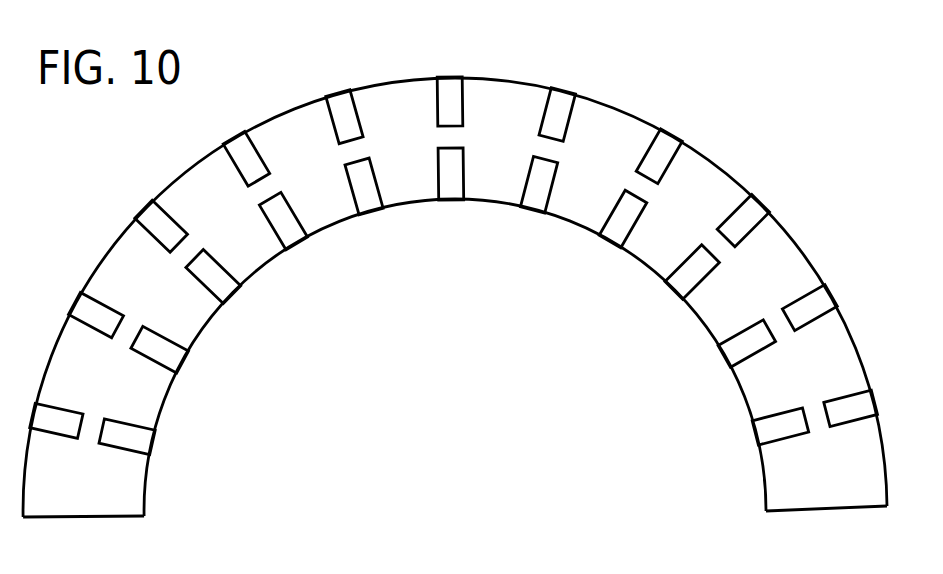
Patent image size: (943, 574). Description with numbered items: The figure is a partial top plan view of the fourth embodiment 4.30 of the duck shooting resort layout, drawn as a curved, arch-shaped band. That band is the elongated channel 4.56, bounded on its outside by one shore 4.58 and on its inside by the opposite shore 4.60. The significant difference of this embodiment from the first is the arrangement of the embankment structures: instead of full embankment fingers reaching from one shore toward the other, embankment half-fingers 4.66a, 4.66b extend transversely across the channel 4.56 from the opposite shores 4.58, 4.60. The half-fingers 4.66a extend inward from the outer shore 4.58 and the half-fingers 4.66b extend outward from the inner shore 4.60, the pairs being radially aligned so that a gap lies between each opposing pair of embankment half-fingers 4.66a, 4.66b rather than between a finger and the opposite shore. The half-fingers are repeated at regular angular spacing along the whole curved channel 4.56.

The fourth embodiment 4.30 is at (692, 60).
The channel 4.56 is at (711, 189).
The shore 4.58 is at (391, 84).
The shore 4.60 is at (418, 201).
The embankment half-finger 4.66a is at (660, 150).
The embankment half-finger 4.66b is at (618, 224).